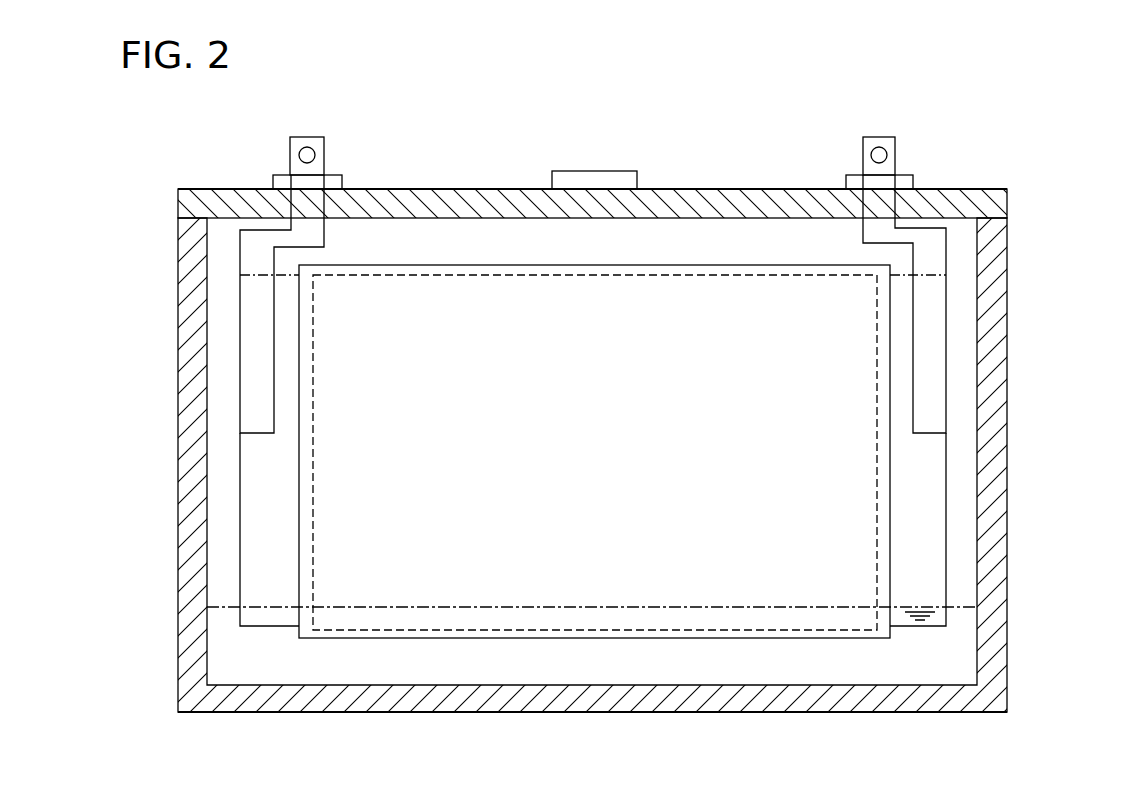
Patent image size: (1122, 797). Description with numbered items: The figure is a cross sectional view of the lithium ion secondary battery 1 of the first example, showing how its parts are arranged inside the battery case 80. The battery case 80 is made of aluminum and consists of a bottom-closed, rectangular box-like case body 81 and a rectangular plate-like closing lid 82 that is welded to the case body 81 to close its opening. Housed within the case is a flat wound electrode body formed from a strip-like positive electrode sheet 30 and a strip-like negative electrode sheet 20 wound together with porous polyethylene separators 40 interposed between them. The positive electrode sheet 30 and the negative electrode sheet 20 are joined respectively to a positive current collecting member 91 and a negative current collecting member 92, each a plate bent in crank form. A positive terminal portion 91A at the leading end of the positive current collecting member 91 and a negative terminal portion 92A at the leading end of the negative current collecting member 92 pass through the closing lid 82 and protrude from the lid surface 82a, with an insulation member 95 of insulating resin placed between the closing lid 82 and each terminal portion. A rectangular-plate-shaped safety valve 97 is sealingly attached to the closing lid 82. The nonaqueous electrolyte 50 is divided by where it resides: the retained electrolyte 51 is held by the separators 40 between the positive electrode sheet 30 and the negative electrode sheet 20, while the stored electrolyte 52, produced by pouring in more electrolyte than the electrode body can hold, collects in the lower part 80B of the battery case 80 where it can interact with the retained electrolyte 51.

The lithium ion secondary battery 1 is at (1004, 135).
The negative electrode sheet 20 is at (927, 588).
The positive electrode sheet 30 is at (270, 616).
The separators 40 is at (383, 588).
The electrolyte 50 is at (591, 673).
The retained electrolyte 51 is at (640, 555).
The stored electrolyte 52 is at (524, 648).
The battery case 80 is at (649, 449).
The lower part 80B is at (494, 681).
The case body 81 is at (988, 226).
The closing lid 82 is at (1007, 196).
The lid surface 82a is at (418, 188).
The positive current collecting member 91 is at (252, 262).
The positive terminal portion 91A is at (310, 137).
The negative current collecting member 92 is at (930, 254).
The negative terminal portion 92A is at (885, 137).
The insulation member 95 is at (331, 178).
The safety valve 97 is at (583, 171).